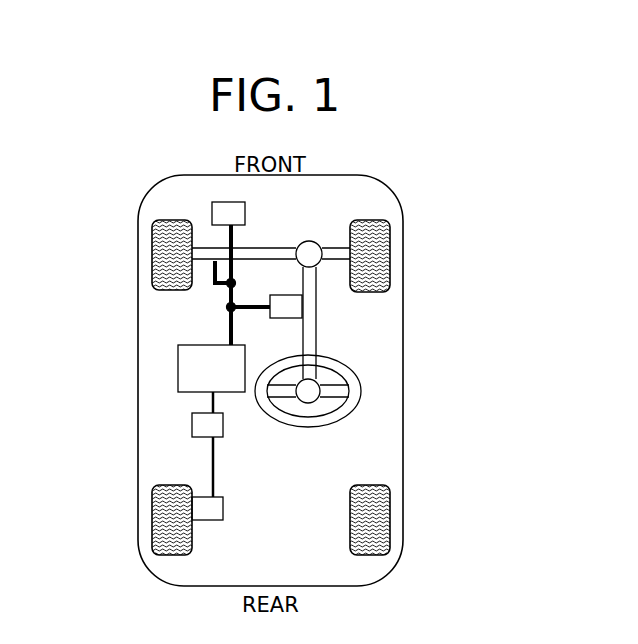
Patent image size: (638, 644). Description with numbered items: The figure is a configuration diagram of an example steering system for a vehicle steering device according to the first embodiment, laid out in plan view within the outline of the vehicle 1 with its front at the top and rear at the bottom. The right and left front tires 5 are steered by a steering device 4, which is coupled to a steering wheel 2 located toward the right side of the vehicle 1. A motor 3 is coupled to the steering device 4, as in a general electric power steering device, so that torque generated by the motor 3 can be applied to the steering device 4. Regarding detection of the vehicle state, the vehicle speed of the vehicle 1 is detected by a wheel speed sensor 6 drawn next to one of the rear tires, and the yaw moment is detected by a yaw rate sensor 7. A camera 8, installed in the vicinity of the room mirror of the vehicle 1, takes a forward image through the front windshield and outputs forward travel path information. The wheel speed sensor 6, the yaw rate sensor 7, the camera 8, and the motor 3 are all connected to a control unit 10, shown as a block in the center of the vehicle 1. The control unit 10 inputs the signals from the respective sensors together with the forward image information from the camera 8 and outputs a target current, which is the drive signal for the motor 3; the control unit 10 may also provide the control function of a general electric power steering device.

The vehicle 1 is at (145, 440).
The steering wheel 2 is at (343, 365).
The motor 3 is at (278, 306).
The steering device 4 is at (298, 246).
The front tires 5 is at (152, 268).
The wheel speed sensor 6 is at (210, 508).
The yaw rate sensor 7 is at (212, 424).
The camera 8 is at (240, 221).
The control unit 10 is at (178, 372).